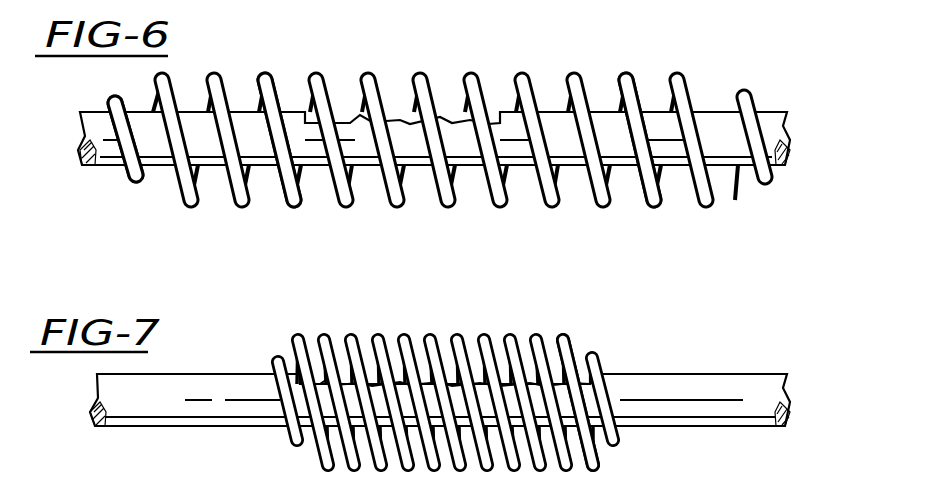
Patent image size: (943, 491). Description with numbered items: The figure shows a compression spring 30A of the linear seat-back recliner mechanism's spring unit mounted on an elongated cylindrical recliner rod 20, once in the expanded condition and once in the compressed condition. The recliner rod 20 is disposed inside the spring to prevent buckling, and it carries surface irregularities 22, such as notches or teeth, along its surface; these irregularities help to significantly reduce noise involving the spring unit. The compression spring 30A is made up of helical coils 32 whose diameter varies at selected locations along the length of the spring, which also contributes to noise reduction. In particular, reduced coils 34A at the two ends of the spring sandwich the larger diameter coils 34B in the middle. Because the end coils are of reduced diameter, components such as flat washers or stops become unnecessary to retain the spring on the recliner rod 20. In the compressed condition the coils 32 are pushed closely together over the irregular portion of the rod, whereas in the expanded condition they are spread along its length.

In FIG. 7, the recliner rod 20 is at (738, 375).
In FIG. 6, the surface irregularities 22 is at (401, 110).
In FIG. 7, the surface irregularities 22 is at (447, 380).
In FIG. 6, the compression spring 30A is at (434, 100).
In FIG. 7, the compression spring 30A is at (444, 344).
In FIG. 6, the coils 32 is at (626, 82).
In FIG. 7, the coils 32 is at (568, 340).
In FIG. 6, the reduced coils 34A is at (128, 170).
In FIG. 6, the larger diameter coils 34B is at (292, 210).